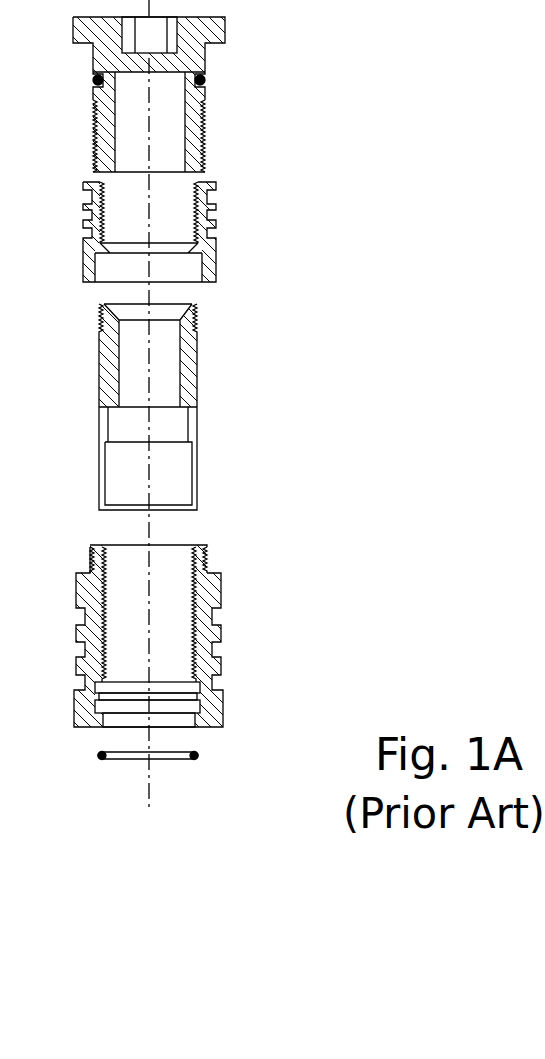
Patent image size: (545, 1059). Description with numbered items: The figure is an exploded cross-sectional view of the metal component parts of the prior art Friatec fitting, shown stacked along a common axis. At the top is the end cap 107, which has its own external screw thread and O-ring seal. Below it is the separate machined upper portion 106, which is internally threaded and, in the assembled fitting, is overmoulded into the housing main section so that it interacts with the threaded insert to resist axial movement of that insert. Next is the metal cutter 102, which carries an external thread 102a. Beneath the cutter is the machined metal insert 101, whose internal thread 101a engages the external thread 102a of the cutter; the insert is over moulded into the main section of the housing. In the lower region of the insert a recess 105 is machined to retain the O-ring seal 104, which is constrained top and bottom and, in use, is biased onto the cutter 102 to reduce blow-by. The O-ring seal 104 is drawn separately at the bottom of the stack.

The end cap 107 is at (200, 54).
The machined upper portion 106 is at (216, 222).
The metal cutter 102 is at (215, 403).
The external thread 102a is at (198, 312).
The machined metal insert 101 is at (226, 618).
The internal thread 101a is at (205, 580).
The recess 105 is at (205, 708).
The O-ring seal 104 is at (200, 751).